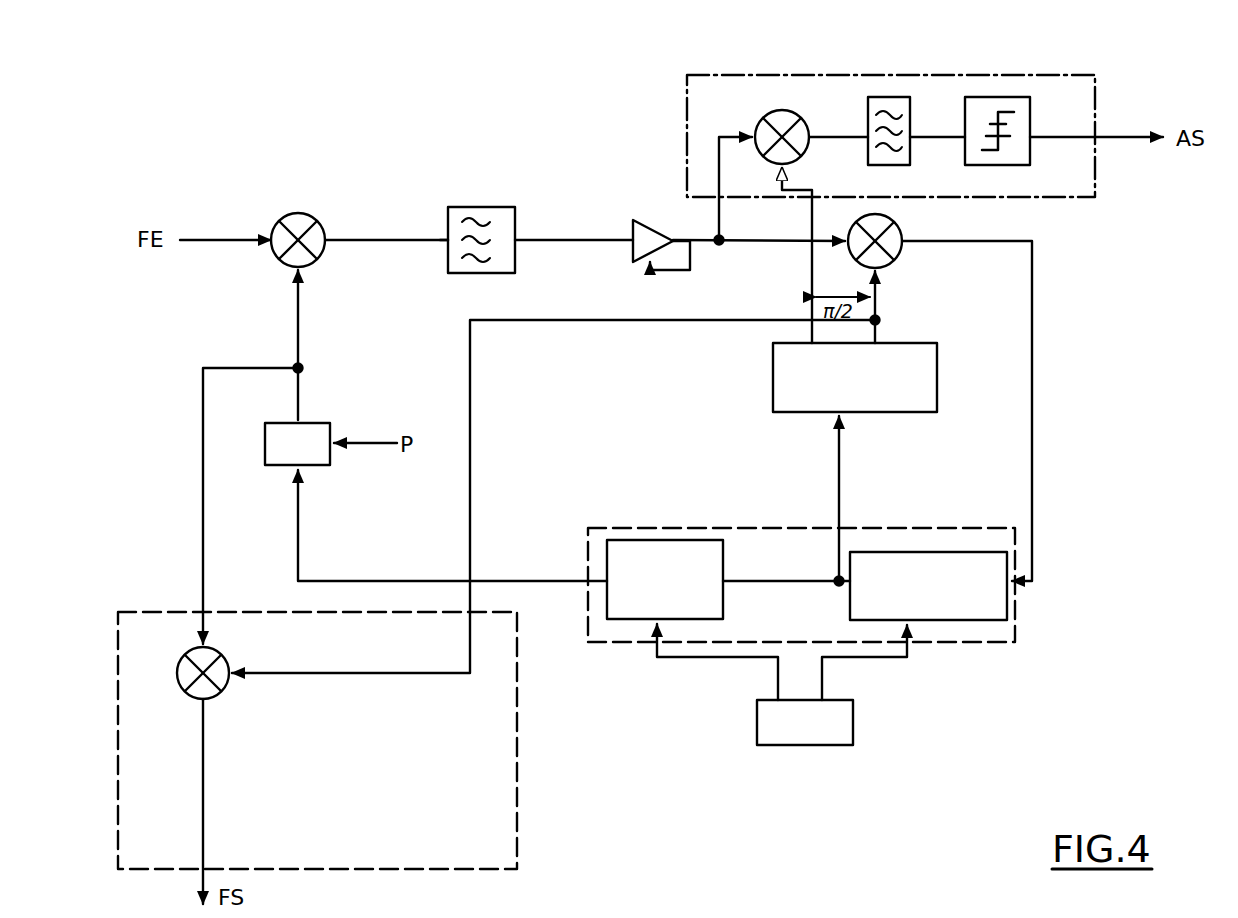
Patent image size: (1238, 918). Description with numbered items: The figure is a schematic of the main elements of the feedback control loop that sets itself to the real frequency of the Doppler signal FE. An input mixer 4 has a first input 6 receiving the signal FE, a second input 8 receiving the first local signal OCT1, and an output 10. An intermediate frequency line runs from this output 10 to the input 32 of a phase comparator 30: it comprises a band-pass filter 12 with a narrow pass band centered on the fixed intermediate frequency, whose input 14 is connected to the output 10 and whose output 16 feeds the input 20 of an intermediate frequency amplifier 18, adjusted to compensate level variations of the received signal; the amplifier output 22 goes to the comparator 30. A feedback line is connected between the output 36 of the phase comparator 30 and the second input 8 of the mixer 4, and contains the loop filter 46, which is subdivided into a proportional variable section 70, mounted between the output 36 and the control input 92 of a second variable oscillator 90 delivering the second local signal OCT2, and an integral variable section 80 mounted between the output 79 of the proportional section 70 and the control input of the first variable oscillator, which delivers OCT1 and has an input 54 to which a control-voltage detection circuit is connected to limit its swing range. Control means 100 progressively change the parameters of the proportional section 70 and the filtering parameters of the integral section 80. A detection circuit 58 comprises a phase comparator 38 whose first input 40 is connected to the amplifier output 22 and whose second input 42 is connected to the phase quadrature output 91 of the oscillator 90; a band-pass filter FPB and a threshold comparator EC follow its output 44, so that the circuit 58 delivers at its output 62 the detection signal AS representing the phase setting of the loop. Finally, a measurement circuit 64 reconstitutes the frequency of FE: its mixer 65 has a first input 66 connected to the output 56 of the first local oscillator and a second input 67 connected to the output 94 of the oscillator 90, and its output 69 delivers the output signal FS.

The input mixer 4 is at (310, 218).
The first input 6 is at (222, 238).
The second input 8 is at (286, 265).
The output 10 is at (332, 242).
The band-pass filter 12 is at (490, 208).
The input 14 is at (448, 257).
The output 16 is at (522, 230).
The intermediate frequency amplifier 18 is at (652, 225).
The input 20 is at (633, 253).
The output 22 is at (678, 240).
The phase comparator 30 is at (891, 222).
The input 32 is at (850, 250).
The output 36 is at (905, 244).
The phase comparator 38 is at (794, 118).
The first input 40 is at (751, 128).
The second input 42 is at (776, 154).
The output 44 is at (812, 140).
The loop filter 46 is at (652, 528).
The input 54 is at (308, 468).
The output 56 is at (300, 422).
The detection circuit 58 is at (1092, 198).
The output 62 is at (1113, 140).
The measurement circuit 64 is at (516, 750).
The mixer 65 is at (178, 678).
The first input 66 is at (206, 620).
The second input 67 is at (252, 676).
The output 69 is at (206, 706).
The proportional variable section 70 is at (850, 600).
The output 79 is at (844, 570).
The integral variable section 80 is at (723, 565).
The second variable oscillator 90 is at (773, 400).
The phase quadrature output 91 is at (802, 332).
The control input 92 is at (855, 414).
The output 94 is at (880, 326).
The control means 100 is at (854, 726).
The band-pass filter FPB is at (886, 96).
The threshold comparator EC is at (1006, 98).
The first local signal OCT1 is at (300, 336).
The second local signal OCT2 is at (880, 312).